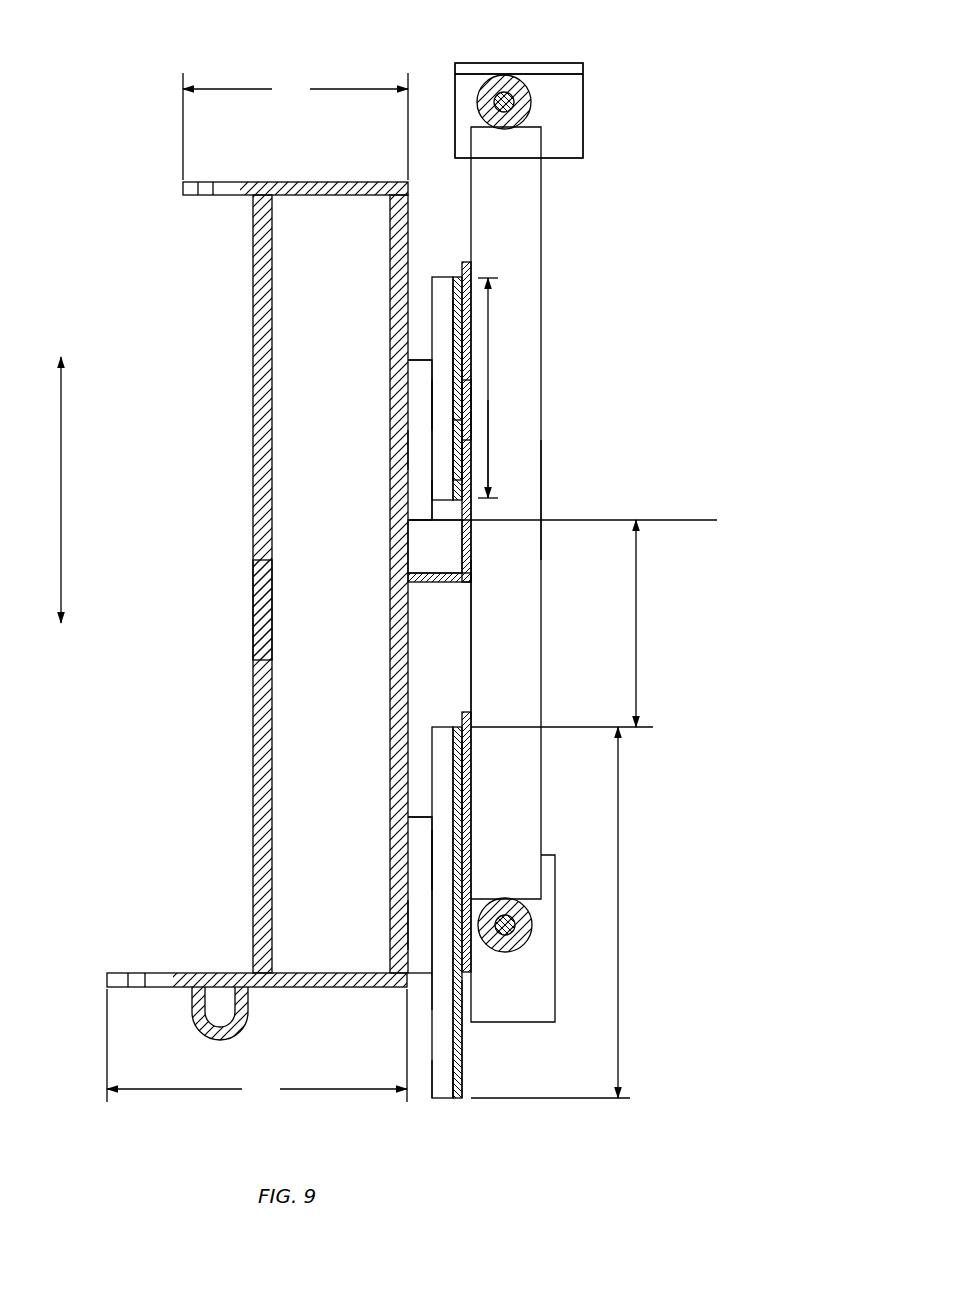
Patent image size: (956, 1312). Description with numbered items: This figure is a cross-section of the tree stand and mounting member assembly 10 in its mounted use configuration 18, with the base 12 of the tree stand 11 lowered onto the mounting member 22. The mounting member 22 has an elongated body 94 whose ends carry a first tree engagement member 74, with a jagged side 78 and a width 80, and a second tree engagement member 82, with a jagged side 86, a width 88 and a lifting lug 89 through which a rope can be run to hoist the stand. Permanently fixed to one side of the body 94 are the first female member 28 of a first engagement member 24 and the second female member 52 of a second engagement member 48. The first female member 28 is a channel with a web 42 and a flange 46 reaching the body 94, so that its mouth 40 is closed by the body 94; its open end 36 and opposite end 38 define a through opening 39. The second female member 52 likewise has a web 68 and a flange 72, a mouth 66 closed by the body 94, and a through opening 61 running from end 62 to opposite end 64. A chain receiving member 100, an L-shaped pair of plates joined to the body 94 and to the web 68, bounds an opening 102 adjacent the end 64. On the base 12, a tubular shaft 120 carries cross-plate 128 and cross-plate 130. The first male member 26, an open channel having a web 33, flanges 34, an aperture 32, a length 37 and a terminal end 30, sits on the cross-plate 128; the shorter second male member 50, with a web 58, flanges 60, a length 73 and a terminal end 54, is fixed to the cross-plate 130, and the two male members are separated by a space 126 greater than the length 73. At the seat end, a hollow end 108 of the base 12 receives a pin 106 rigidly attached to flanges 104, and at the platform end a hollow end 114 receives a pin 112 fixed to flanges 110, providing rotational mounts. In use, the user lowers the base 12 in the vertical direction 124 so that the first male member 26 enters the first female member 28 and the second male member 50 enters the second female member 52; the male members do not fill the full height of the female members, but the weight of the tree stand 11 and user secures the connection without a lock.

The tree stand and mounting member assembly 10 is at (668, 66).
The tree stand 11 is at (545, 300).
The base 12 is at (527, 511).
The mounted use configuration 18 is at (175, 312).
The mounting member 22 is at (253, 422).
The first engagement member 24 is at (430, 990).
The first male member 26 is at (460, 1037).
The first female member 28 is at (408, 890).
The terminal end 30 is at (440, 1100).
The aperture 32 is at (458, 1065).
The web 33 is at (455, 1100).
The flanges 34 is at (440, 1050).
The end 36 is at (420, 817).
The length 37 is at (622, 812).
The opposite end 38 is at (418, 973).
The through opening 39 is at (420, 835).
The mouth 40 is at (412, 931).
The web 42 is at (467, 853).
The flange 46 is at (420, 857).
The second engagement member 48 is at (437, 262).
The second male member 50 is at (462, 425).
The second female member 52 is at (416, 410).
The terminal end 54 is at (432, 505).
The web 58 is at (460, 446).
The flanges 60 is at (460, 410).
The through opening 61 is at (422, 400).
The end 62 is at (420, 360).
The opposite end 64 is at (422, 522).
The mouth 66 is at (410, 452).
The web 68 is at (465, 435).
The flange 72 is at (422, 388).
The length 73 is at (488, 482).
The first tree engagement member 74 is at (333, 182).
The jagged side 78 is at (187, 189).
The width 80 is at (295, 126).
The second tree engagement member 82 is at (195, 973).
The jagged side 86 is at (107, 978).
The width 88 is at (257, 1045).
The lifting lug 89 is at (240, 1035).
The body 94 is at (253, 600).
The chain receiving member 100 is at (467, 560).
The opening 102 is at (435, 546).
The flanges 104 is at (572, 108).
The pin 106 is at (522, 99).
The hollow end 108 is at (514, 108).
The flanges 110 is at (540, 957).
The pin 112 is at (522, 915).
The hollow end 114 is at (500, 938).
The tubular shaft 120 is at (512, 667).
The vertical direction 124 is at (61, 514).
The space 126 is at (640, 622).
The cross-plate 128 is at (467, 787).
The cross-plate 130 is at (465, 328).